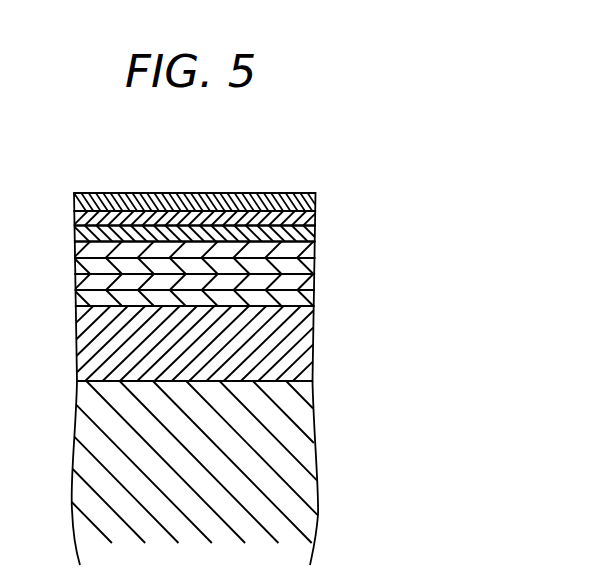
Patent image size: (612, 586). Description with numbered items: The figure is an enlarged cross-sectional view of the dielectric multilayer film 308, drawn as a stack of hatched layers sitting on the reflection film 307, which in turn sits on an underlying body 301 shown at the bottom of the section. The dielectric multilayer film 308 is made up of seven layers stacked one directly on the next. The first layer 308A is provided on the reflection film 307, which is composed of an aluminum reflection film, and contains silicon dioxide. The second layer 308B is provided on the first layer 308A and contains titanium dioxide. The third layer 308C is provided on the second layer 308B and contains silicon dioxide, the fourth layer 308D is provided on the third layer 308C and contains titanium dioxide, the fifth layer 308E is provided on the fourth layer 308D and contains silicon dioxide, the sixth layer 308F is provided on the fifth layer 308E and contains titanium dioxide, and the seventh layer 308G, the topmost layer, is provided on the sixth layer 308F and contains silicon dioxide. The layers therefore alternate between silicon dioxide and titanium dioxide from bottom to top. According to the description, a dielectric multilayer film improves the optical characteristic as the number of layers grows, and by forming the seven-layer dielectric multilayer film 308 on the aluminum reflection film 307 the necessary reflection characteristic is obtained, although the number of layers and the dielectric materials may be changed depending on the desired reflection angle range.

The substrate 301 is at (303, 465).
The reflection film 307 is at (302, 350).
The dielectric multilayer film 308 is at (287, 227).
The first layer 308A is at (305, 298).
The second layer 308B is at (305, 282).
The third layer 308C is at (305, 266).
The fourth layer 308D is at (305, 250).
The fifth layer 308E is at (305, 234).
The sixth layer 308F is at (305, 218).
The seventh layer 308G is at (254, 171).